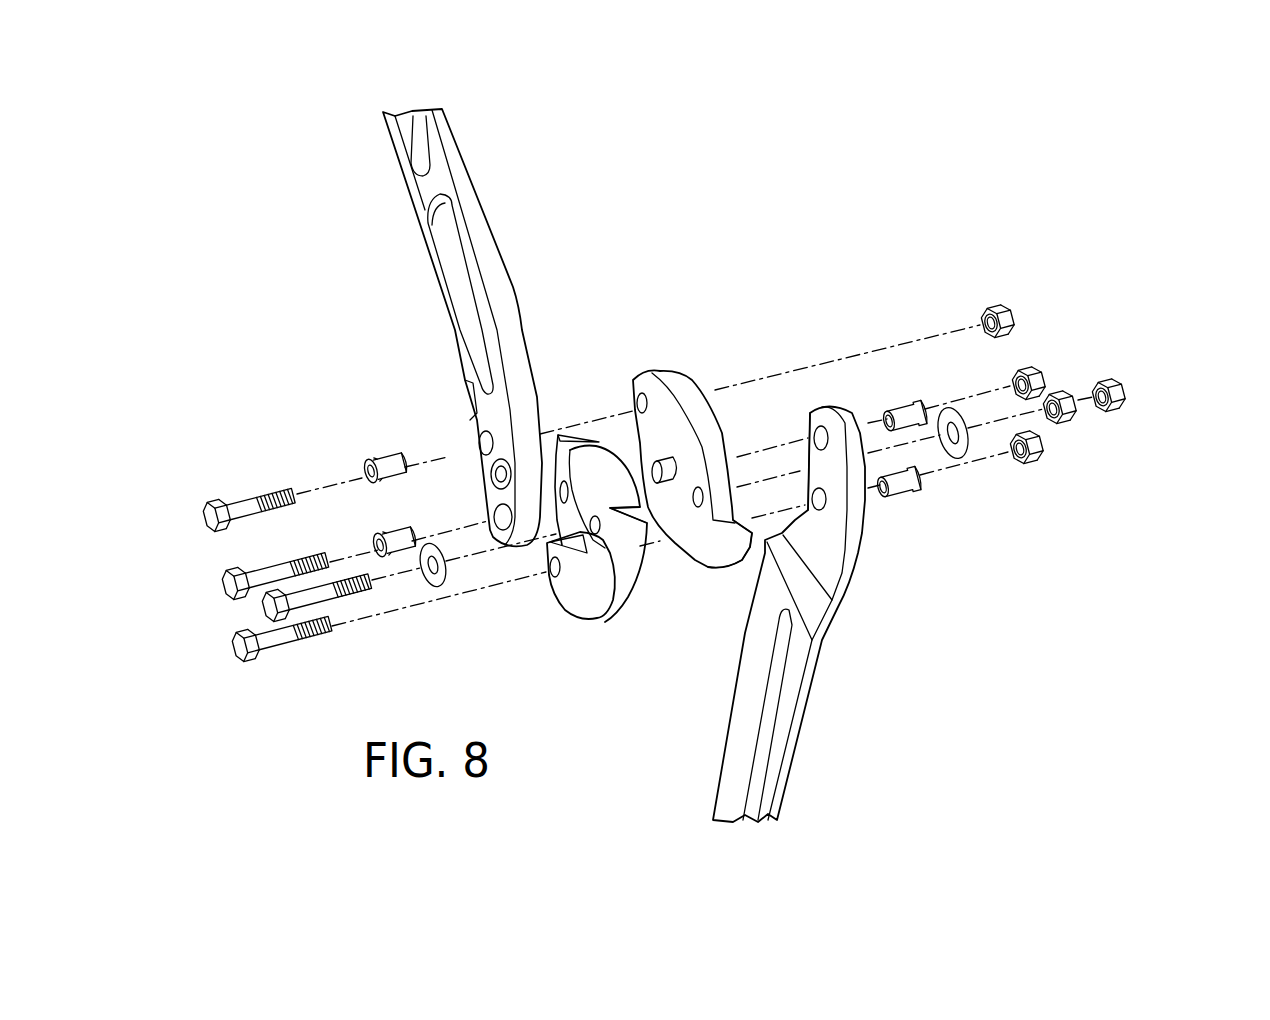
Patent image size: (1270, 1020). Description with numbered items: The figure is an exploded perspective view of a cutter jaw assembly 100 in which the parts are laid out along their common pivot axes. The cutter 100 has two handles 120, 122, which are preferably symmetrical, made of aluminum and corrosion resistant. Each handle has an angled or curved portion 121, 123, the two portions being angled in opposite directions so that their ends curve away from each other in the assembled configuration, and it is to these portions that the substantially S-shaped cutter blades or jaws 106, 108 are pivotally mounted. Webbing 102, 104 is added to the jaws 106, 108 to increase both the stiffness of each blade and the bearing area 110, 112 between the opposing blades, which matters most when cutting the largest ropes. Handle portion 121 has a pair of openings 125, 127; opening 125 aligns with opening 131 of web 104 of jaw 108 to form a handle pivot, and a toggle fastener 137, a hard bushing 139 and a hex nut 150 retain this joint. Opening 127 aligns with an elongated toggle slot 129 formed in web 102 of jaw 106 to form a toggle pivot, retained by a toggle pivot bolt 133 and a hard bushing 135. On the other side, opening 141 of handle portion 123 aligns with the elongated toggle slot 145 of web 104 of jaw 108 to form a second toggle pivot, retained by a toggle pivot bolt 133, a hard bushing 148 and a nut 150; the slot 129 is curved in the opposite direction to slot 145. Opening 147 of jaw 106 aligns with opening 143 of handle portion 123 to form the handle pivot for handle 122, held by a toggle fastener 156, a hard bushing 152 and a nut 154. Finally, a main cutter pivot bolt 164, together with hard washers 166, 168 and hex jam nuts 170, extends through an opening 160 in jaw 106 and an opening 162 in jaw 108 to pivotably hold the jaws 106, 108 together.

The cutter jaw assembly 100 is at (778, 228).
The webbing 102 is at (542, 430).
The webbing 104 is at (658, 372).
The cutter blade or jaw assembly 106 is at (585, 602).
The cutter blade or jaw assembly 108 is at (712, 556).
The bearing area 110 is at (602, 526).
The bearing area 112 is at (676, 458).
The handle 120 is at (463, 192).
The angled or curved portion 121 is at (492, 498).
The handle 122 is at (805, 703).
The angled or curved portion 123 is at (833, 462).
The opening 125 is at (479, 445).
The opening 127 is at (503, 525).
The elongated toggle slot 129 is at (565, 482).
The opening 131 is at (641, 393).
The toggle pivot bolt 133 is at (248, 578).
The hard bushing 135 is at (392, 537).
The toggle fastener 137 is at (233, 507).
The hard bushing 139 is at (386, 460).
The opening 141 is at (820, 425).
The opening 143 is at (850, 538).
The elongated toggle slot 145 is at (677, 422).
The opening 147 is at (552, 574).
The hard bushing 148 is at (900, 405).
The hex nut 150 is at (1000, 308).
The hard bushing 152 is at (905, 490).
The nut 154 is at (1040, 449).
The toggle fastener 156 is at (268, 642).
The opening 160 is at (632, 527).
The opening 162 is at (700, 488).
The main cutter pivot bolt 164 is at (263, 612).
The hard washer 166 is at (435, 582).
The hard washer 168 is at (962, 452).
The hex jam nut 170 is at (1062, 392).